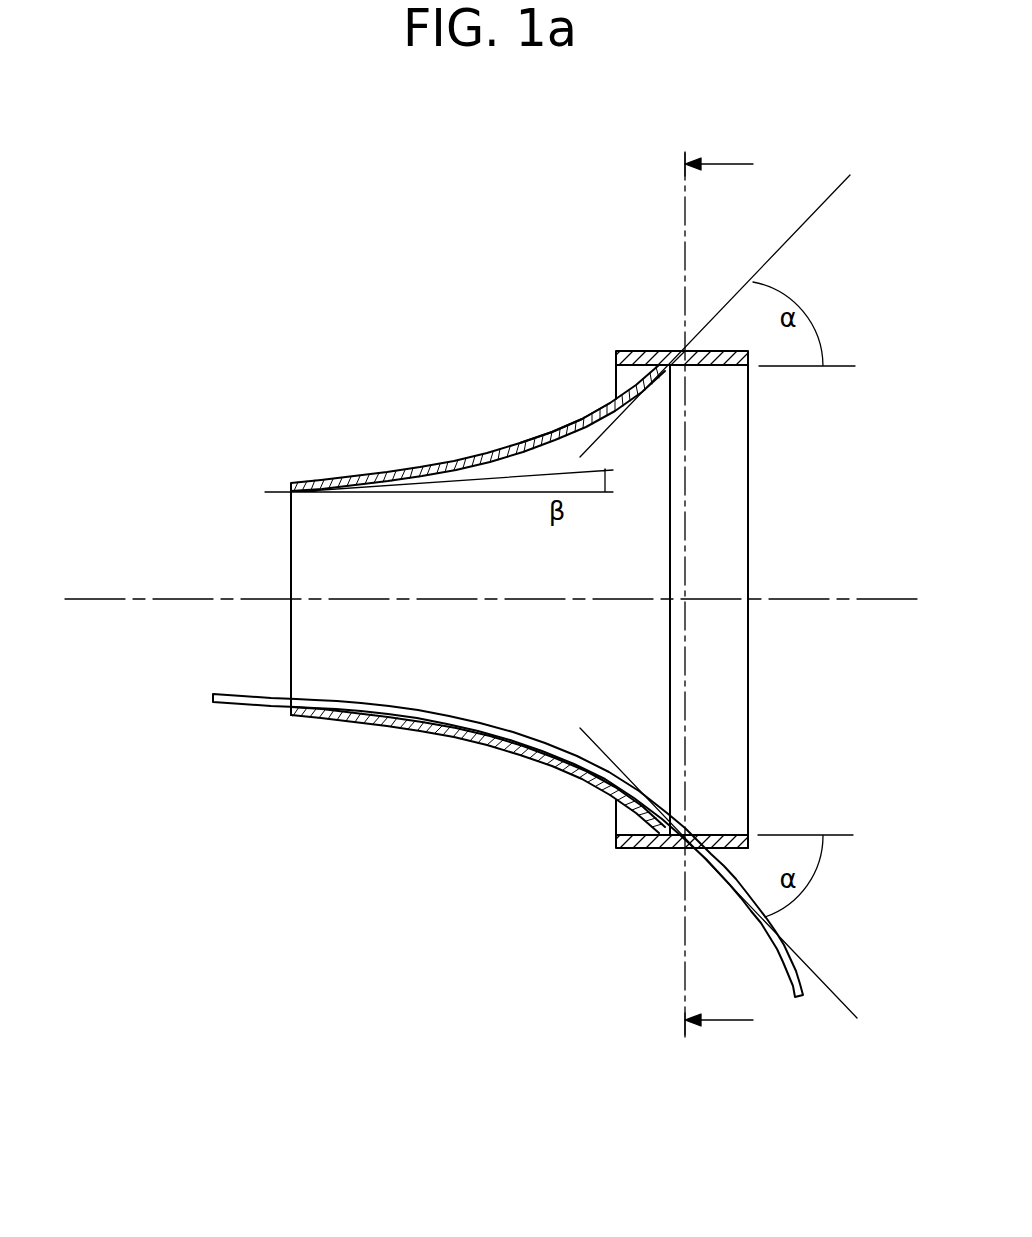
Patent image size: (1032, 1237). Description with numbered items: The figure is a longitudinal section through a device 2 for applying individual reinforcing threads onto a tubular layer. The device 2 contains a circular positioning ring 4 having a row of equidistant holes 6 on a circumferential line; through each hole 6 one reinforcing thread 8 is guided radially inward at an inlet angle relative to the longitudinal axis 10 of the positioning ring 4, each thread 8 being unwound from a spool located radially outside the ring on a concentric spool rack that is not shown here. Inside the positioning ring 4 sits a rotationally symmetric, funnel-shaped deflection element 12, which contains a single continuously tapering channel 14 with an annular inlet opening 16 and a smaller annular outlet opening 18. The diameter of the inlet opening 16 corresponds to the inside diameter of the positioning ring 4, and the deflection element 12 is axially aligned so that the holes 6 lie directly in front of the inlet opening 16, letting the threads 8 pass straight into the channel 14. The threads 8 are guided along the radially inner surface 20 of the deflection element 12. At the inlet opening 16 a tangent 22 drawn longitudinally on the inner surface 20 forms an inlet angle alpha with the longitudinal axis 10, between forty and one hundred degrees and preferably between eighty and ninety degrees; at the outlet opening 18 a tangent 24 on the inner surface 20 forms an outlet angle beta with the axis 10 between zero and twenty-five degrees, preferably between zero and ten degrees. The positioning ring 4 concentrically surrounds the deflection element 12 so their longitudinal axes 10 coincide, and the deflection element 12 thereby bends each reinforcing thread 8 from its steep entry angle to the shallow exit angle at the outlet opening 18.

The device 2 is at (415, 468).
The positioning ring 4 is at (642, 357).
The holes 6 is at (693, 357).
The reinforcing thread 8 is at (793, 968).
The longitudinal axis 10 is at (143, 603).
The deflection element 12 is at (510, 748).
The channel 14 is at (387, 692).
The inlet opening 16 is at (670, 558).
The outlet opening 18 is at (291, 542).
The radially inner surface 20 is at (520, 446).
The tangent 22 is at (780, 253).
The tangent 24 is at (490, 471).